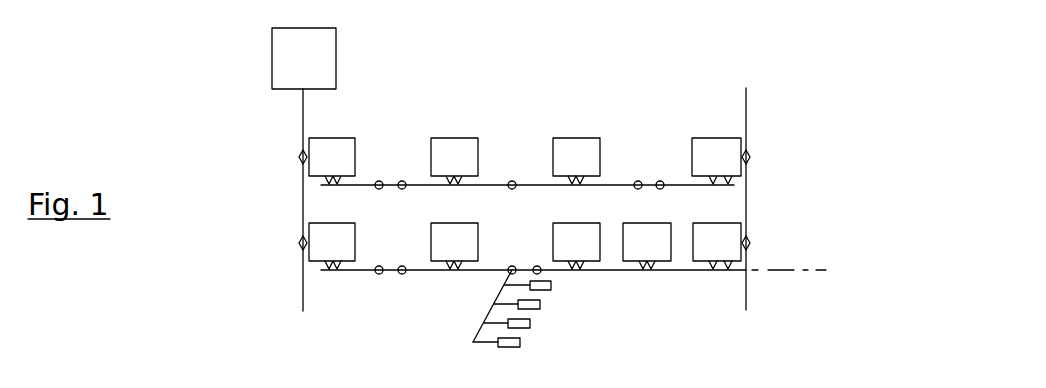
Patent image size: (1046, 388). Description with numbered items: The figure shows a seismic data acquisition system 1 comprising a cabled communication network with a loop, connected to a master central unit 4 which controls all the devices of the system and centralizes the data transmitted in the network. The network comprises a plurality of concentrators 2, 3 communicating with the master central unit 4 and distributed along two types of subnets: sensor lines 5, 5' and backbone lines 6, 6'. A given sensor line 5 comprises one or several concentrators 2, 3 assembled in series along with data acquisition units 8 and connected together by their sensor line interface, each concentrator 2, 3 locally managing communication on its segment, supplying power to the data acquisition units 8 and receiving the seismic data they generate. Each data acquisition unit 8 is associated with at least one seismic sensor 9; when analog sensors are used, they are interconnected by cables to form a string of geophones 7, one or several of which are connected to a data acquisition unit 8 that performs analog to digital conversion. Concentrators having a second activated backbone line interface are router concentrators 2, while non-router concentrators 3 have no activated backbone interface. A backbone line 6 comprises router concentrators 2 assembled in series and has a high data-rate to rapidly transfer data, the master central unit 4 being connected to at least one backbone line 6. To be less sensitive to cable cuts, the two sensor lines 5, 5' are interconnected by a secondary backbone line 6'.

The seismic data acquisition system 1 is at (600, 58).
The router concentrator 2 is at (325, 169).
The non-router concentrator 3 is at (447, 169).
The master central unit 4 is at (297, 68).
The sensor line 5 is at (527, 129).
The sensor line 5' is at (573, 307).
The backbone line 6 is at (278, 205).
The secondary backbone line 6' is at (782, 205).
The string of geophones 7 is at (481, 315).
The data acquisition unit 8 is at (380, 182).
The seismic sensor 9 is at (520, 342).